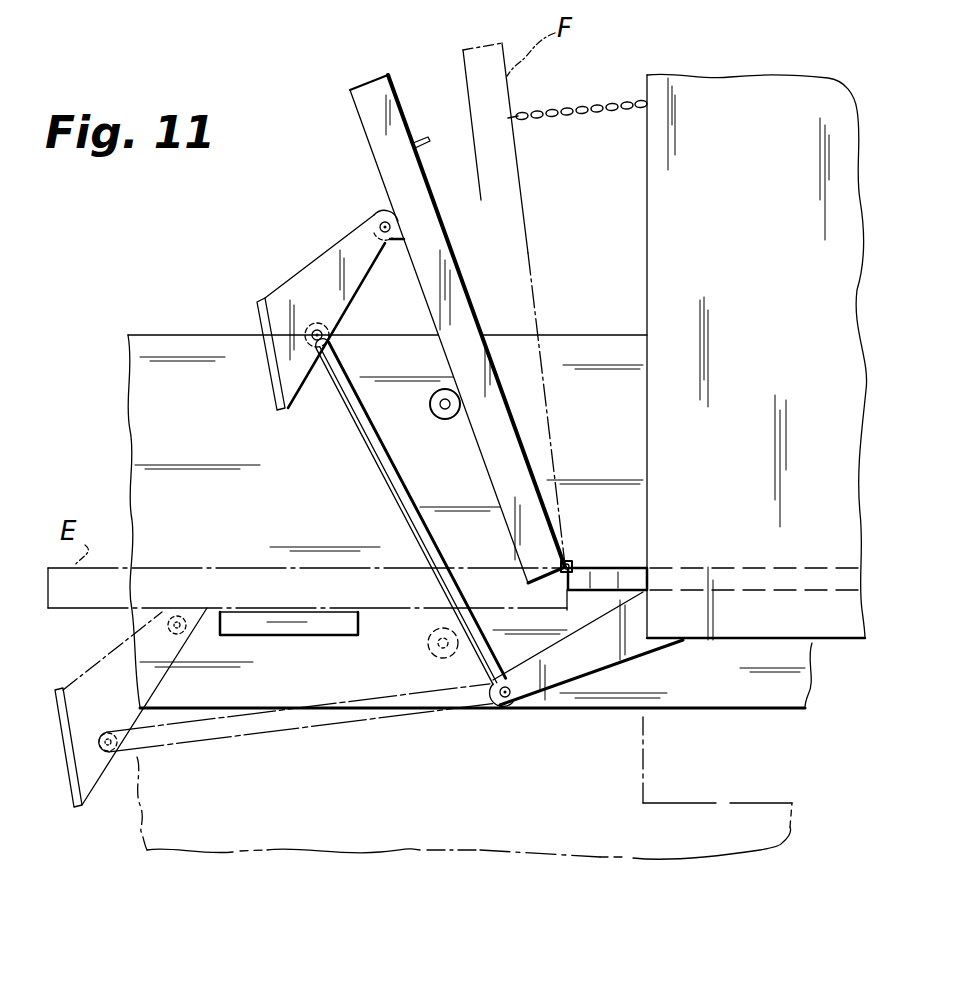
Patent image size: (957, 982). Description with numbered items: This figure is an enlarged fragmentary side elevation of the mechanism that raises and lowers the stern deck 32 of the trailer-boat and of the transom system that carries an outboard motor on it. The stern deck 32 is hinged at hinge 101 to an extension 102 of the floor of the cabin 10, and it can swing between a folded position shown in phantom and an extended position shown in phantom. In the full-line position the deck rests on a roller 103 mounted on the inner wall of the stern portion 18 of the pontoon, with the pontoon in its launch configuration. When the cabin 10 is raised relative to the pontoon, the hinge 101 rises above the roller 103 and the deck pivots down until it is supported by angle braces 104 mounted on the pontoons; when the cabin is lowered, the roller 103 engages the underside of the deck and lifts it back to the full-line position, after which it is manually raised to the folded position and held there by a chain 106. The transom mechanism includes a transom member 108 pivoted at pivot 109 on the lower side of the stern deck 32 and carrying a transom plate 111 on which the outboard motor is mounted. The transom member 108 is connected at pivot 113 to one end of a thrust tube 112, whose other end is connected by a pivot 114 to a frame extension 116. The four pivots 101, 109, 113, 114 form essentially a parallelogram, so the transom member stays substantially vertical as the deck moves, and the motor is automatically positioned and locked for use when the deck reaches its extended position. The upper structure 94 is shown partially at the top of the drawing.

The cabin 10 is at (647, 233).
The rearward end portion of pontoon 18 is at (165, 350).
The stern deck 32 is at (369, 89).
The upper structure 94 is at (674, 2).
The hinge 101 is at (578, 558).
The extension of the cabin floor 102 is at (627, 575).
The roller 103 is at (445, 418).
The angle brace 104 is at (272, 632).
The chain 106 is at (578, 118).
The transom member 108 is at (297, 278).
The pivot 109 is at (381, 221).
The transom plate 111 is at (265, 366).
The thrust tube 112 is at (366, 437).
The pivot 113 is at (330, 330).
The pivot 114 is at (508, 706).
The frame extension 116 is at (632, 653).